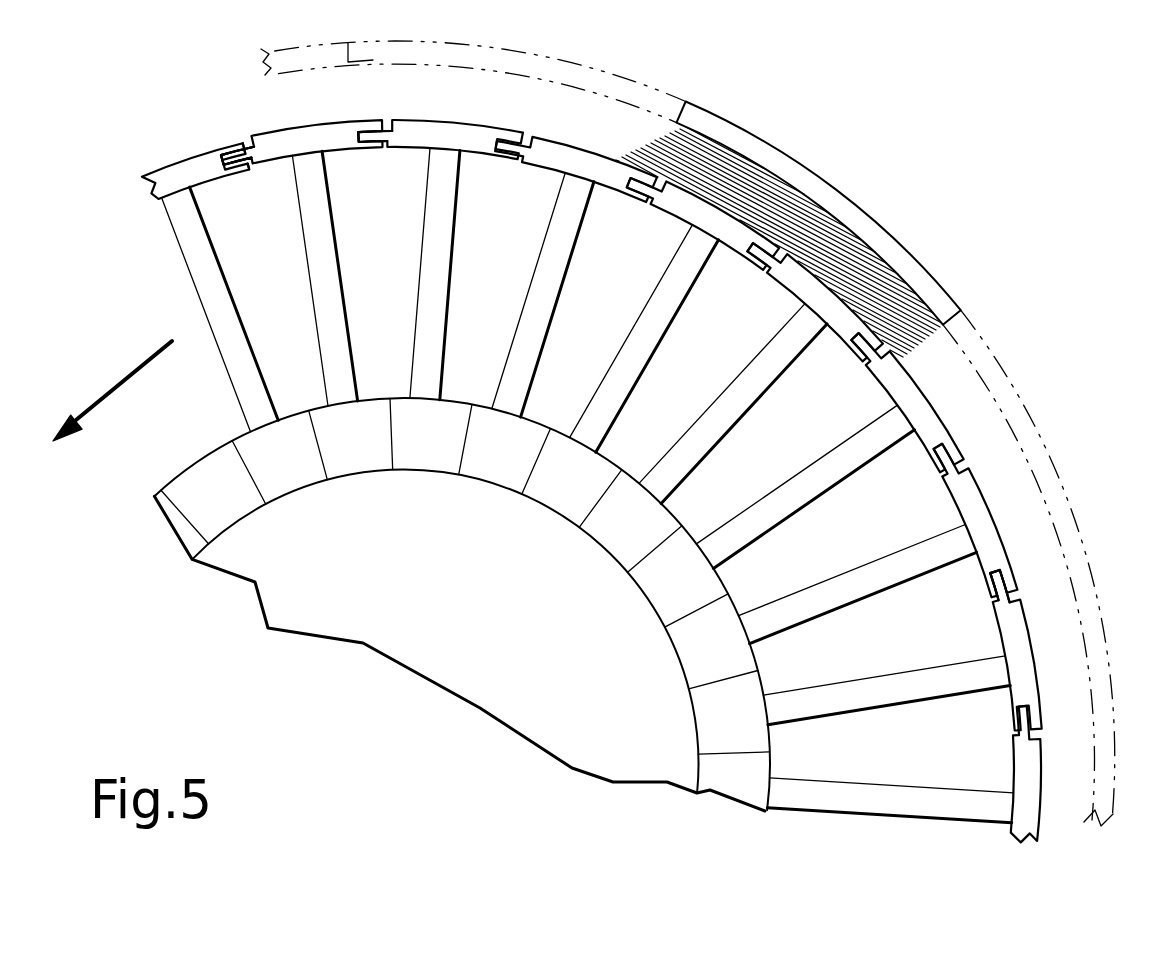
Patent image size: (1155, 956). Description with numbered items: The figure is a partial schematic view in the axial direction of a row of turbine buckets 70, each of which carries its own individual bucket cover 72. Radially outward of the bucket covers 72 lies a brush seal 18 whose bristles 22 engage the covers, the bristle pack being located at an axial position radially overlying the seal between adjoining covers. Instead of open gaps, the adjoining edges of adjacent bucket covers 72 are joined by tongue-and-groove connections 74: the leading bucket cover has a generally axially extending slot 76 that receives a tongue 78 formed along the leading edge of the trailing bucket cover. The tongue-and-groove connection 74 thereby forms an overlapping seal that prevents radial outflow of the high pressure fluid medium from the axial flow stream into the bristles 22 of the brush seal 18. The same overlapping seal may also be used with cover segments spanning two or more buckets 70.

The brush seal 18 is at (822, 158).
The bristles 22 is at (653, 138).
The buckets 70 is at (430, 255).
The bucket cover 72 is at (152, 170).
The tongue-and-groove connection 74 is at (614, 321).
The slot 76 is at (229, 148).
The tongue 78 is at (250, 162).